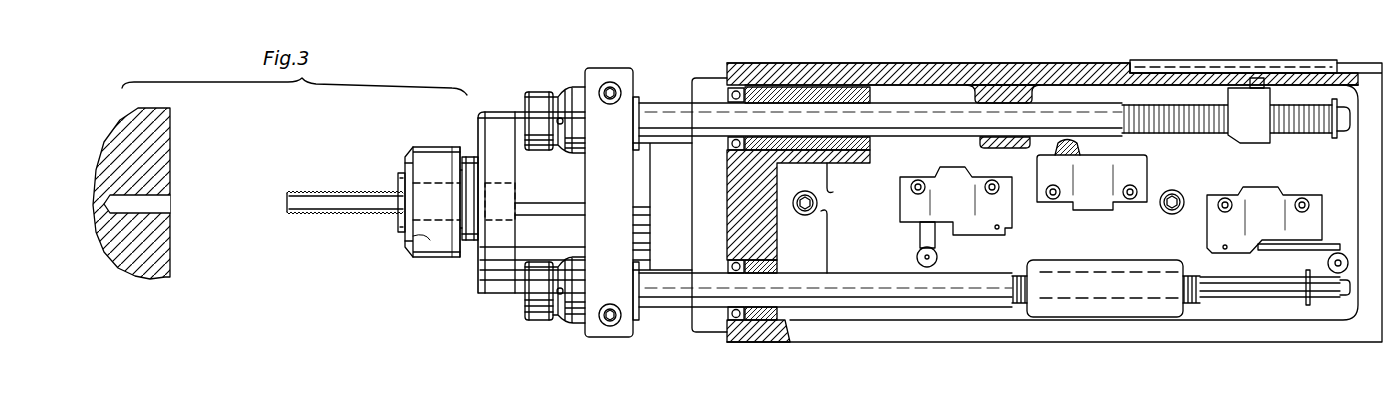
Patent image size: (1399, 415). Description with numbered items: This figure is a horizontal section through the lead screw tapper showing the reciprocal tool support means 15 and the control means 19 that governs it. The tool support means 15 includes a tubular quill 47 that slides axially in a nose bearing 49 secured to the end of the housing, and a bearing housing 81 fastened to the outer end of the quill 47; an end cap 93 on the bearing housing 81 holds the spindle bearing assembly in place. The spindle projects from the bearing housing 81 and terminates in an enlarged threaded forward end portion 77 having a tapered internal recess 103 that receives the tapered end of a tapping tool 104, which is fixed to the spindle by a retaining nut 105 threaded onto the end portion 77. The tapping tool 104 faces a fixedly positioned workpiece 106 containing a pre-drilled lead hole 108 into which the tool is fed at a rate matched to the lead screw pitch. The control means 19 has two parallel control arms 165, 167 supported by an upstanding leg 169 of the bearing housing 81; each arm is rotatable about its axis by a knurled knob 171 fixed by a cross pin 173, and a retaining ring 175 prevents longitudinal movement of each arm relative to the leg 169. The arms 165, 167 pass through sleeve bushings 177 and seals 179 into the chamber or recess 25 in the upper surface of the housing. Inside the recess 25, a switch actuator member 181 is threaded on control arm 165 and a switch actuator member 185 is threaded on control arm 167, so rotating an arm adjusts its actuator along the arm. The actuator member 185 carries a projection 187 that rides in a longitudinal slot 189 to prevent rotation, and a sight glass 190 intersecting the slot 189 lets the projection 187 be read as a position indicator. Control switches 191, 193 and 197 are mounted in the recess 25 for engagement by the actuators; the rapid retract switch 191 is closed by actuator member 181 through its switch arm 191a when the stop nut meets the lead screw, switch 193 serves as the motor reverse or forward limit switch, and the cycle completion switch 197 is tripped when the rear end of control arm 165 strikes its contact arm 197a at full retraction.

The reciprocal tool support means 15 is at (470, 290).
The control means 19 is at (812, 358).
The chamber or recess 25 is at (1250, 315).
The tubular quill 47 is at (643, 320).
The nose bearing 49 is at (688, 346).
The threaded forward end portion 77 is at (468, 242).
The bearing housing 81 is at (524, 296).
The end cap 93 is at (500, 295).
The tapered internal recess 103 is at (402, 240).
The tapping tool 104 is at (338, 212).
The retaining nut 105 is at (423, 258).
The workpiece 106 is at (150, 270).
The pre-drilled lead hole 108 is at (160, 206).
The control arm 165 is at (672, 307).
The control arm 167 is at (660, 103).
The upstanding leg 169 is at (598, 80).
The knurled knob 171 is at (530, 100).
The cross pin 173 is at (558, 100).
The retaining ring 175 is at (640, 97).
The sleeve bushing 177 is at (775, 90).
The seal 179 is at (737, 88).
The switch actuator member 181 is at (1075, 266).
The switch actuator member 185 is at (1255, 136).
The projection 187 is at (1257, 78).
The longitudinal slot 189 is at (1097, 82).
The sight glass 190 is at (1140, 61).
The rapid retract control switch 191 is at (905, 211).
The switch arm 191a is at (922, 242).
The motor reverse or forward limit switch 193 is at (1073, 190).
The cycle completion detection switch 197 is at (1310, 220).
The contact arm 197a is at (1312, 249).